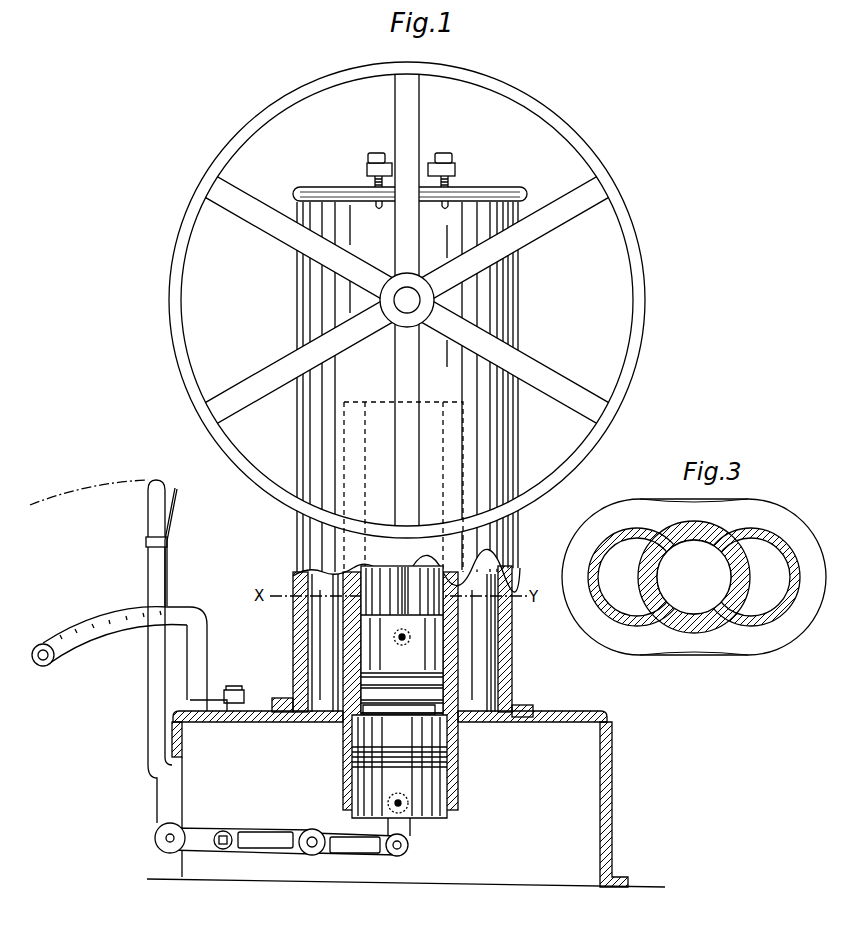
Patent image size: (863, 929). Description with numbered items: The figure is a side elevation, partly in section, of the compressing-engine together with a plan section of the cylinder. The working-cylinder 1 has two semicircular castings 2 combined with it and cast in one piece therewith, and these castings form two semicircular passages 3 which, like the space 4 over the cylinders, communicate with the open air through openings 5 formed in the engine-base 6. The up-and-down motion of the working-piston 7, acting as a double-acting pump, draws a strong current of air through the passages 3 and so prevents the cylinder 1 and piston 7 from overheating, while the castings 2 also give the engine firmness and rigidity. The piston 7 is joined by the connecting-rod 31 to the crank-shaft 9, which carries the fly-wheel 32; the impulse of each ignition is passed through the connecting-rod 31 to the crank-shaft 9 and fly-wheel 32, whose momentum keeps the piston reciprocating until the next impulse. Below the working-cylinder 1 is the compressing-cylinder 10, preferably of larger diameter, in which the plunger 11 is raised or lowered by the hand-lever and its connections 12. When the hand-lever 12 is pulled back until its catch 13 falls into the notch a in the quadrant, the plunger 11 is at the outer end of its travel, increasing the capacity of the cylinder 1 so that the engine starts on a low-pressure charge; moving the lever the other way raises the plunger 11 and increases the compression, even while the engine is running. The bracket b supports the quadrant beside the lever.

In FIG. 1, the working-cylinder 1 is at (402, 639).
In FIG. 3, the working-cylinder 1 is at (694, 577).
In FIG. 1, the semicircular castings 2 is at (410, 372).
In FIG. 3, the semicircular castings 2 is at (694, 577).
In FIG. 1, the semicircular passages 3 is at (402, 688).
In FIG. 3, the semicircular passages 3 is at (694, 577).
In FIG. 1, the connecting-rod 31 is at (412, 590).
In FIG. 1, the space over the cylinders 4 is at (403, 473).
In FIG. 1, the openings 5 is at (390, 717).
In FIG. 1, the engine-base 6 is at (406, 804).
In FIG. 1, the working-piston 7 is at (398, 646).
In FIG. 1, the crank-shaft 9 is at (407, 300).
In FIG. 1, the compressing-cylinder 10 is at (399, 761).
In FIG. 1, the plunger 11 is at (394, 796).
In FIG. 1, the hand-lever and its connections 12 is at (269, 668).
In FIG. 1, the catch 13 is at (106, 543).
In FIG. 1, the fly-wheel 32 is at (407, 300).
In FIG. 1, the notch a is at (109, 636).
In FIG. 1, the bracket b is at (206, 650).